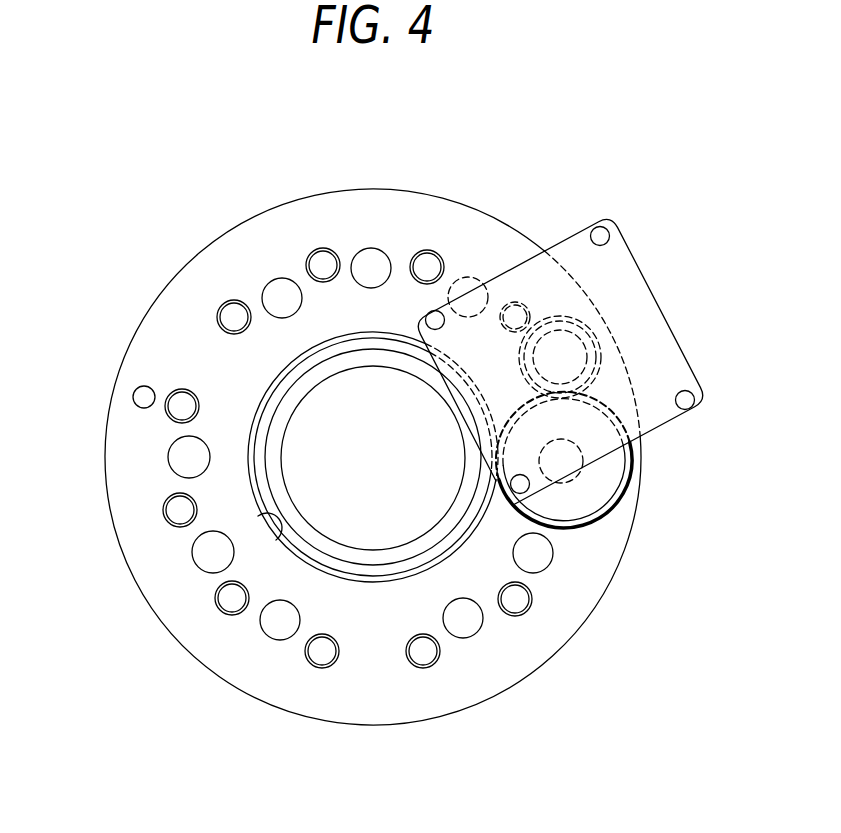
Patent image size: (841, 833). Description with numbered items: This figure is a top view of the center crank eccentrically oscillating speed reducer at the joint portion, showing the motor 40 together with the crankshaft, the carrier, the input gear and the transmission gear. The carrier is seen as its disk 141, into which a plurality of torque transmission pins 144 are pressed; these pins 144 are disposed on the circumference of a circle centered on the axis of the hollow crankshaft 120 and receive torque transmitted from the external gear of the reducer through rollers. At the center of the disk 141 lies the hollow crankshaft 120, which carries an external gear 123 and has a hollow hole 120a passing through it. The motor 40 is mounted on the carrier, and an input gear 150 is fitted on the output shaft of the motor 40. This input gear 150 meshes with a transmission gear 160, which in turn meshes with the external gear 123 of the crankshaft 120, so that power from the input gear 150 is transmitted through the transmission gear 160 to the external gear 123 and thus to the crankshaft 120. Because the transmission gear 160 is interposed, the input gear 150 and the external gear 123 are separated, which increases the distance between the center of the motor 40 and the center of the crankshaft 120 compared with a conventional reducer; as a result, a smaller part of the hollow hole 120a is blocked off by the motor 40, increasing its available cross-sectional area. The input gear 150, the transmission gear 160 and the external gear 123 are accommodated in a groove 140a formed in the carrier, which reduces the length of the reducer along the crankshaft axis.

The disk 141 is at (420, 203).
The torque transmission pins 144 is at (282, 294).
The external gear 123 is at (335, 572).
The hollow crankshaft 120 is at (367, 565).
The hollow hole 120a is at (413, 541).
The groove 140a is at (270, 540).
The motor 40 is at (627, 257).
The input gear 150 is at (573, 355).
The transmission gear 160 is at (590, 502).